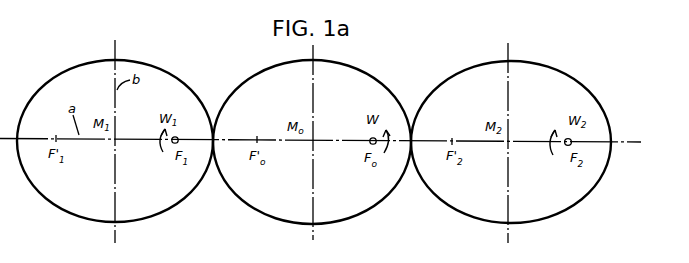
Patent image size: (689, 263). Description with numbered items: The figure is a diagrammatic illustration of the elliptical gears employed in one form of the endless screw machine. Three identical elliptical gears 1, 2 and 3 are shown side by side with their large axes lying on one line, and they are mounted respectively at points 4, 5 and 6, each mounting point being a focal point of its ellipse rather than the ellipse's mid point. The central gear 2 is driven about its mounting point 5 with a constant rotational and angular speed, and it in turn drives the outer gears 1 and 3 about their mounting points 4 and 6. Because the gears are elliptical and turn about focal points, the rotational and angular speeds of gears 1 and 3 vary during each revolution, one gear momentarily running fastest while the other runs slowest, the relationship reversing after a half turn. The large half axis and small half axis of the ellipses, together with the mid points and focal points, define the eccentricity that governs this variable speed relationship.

The elliptical gear 1 is at (166, 66).
The elliptical gear 2 is at (370, 73).
The elliptical gear 3 is at (594, 101).
The mounting point 4 is at (178, 137).
The mounting point 5 is at (376, 138).
The mounting point 6 is at (572, 139).